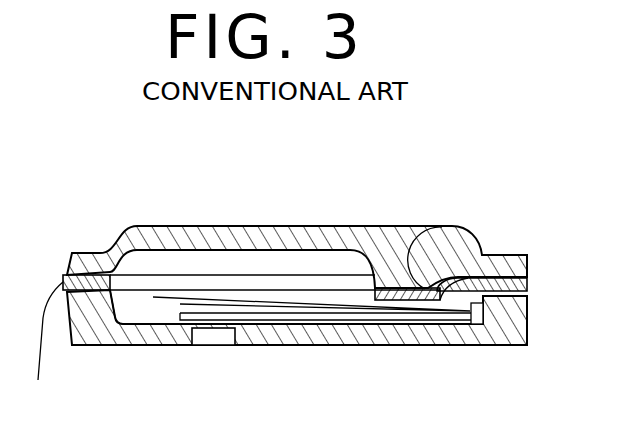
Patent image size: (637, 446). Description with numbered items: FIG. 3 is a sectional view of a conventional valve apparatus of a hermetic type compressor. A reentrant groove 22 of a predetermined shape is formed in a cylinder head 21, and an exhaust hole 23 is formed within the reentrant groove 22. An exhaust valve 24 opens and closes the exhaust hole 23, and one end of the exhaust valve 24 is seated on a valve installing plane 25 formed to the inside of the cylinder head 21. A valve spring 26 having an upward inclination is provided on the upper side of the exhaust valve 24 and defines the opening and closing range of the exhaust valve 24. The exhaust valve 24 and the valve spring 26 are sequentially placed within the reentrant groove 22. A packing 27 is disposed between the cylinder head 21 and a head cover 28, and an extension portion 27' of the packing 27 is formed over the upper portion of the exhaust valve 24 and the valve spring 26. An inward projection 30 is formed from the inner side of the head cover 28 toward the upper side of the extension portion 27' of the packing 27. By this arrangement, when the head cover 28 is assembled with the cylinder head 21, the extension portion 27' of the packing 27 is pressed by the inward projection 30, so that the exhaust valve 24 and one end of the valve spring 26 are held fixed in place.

The cylinder head 21 is at (406, 345).
The reentrant groove 22 is at (131, 307).
The exhaust hole 23 is at (224, 337).
The exhaust valve 24 is at (178, 314).
The valve installing plane 25 is at (478, 256).
The valve spring 26 is at (160, 294).
The packing 27 is at (232, 342).
The extension portion 27' is at (370, 201).
The head cover 28 is at (196, 232).
The inward projection 30 is at (405, 283).